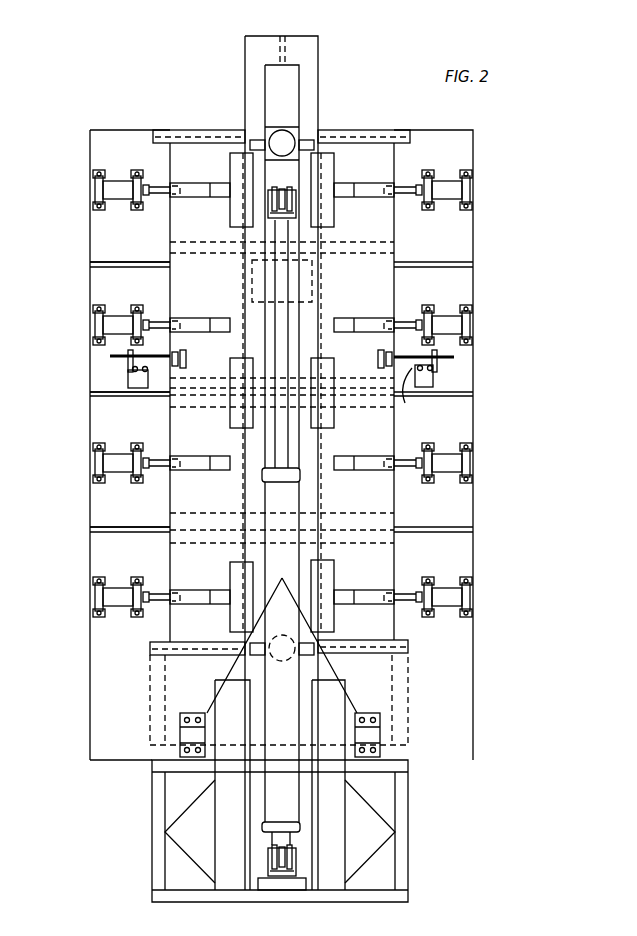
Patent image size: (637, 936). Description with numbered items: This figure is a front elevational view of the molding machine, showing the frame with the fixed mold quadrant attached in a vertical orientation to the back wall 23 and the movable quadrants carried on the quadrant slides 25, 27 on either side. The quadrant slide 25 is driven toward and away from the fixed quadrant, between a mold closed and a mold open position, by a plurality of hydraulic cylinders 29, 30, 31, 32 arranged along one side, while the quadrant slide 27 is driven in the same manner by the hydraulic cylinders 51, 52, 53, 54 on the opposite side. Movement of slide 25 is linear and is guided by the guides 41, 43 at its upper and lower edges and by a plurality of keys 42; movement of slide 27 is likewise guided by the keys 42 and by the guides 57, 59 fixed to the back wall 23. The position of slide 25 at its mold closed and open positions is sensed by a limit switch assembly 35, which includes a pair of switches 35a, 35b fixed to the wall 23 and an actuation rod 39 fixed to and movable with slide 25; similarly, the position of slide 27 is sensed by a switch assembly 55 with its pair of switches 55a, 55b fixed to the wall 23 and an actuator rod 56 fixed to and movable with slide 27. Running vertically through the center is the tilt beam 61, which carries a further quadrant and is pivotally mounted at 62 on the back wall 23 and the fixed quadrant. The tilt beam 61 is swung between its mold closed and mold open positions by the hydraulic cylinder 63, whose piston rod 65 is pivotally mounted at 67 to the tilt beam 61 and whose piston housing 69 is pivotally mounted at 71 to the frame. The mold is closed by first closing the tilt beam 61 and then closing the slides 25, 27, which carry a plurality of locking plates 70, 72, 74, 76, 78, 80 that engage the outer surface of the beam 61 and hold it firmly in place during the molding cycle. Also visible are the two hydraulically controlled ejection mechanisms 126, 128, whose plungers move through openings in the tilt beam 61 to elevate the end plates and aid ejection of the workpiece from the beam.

The back wall 23 is at (125, 140).
The quadrant slide 25 is at (376, 231).
The quadrant slide 27 is at (194, 223).
The hydraulic cylinder 29 is at (452, 193).
The hydraulic cylinder 30 is at (455, 318).
The hydraulic cylinder 31 is at (450, 462).
The hydraulic cylinder 32 is at (455, 598).
The limit switch assembly 35 is at (120, 368).
The switch 35a is at (138, 372).
The switch 35b is at (150, 366).
The actuation rod 39 is at (120, 357).
The guide 41 is at (192, 140).
The keys 42 is at (130, 262).
The guide 43 is at (162, 650).
The hydraulic cylinder 51 is at (100, 183).
The hydraulic cylinder 52 is at (118, 318).
The hydraulic cylinder 53 is at (110, 480).
The hydraulic cylinder 54 is at (120, 578).
The switch assembly 55 is at (456, 357).
The switch 55a is at (433, 368).
The switch 55b is at (418, 394).
The actuator rod 56 is at (392, 352).
The guide 57 is at (374, 140).
The guide 59 is at (400, 651).
The tilt beam 61 is at (300, 85).
The pivot mount 62 is at (383, 732).
The hydraulic cylinder 63 is at (300, 806).
The piston rod 65 is at (280, 284).
The pivot mount 67 is at (270, 200).
The piston housing 69 is at (288, 500).
The locking plate 70 is at (236, 175).
The pivot mount 71 is at (265, 852).
The locking plate 72 is at (236, 416).
The locking plate 74 is at (240, 582).
The locking plate 76 is at (326, 180).
The locking plate 78 is at (330, 418).
The locking plate 80 is at (326, 576).
The ejection mechanism 126 is at (298, 652).
The ejection mechanism 128 is at (296, 133).